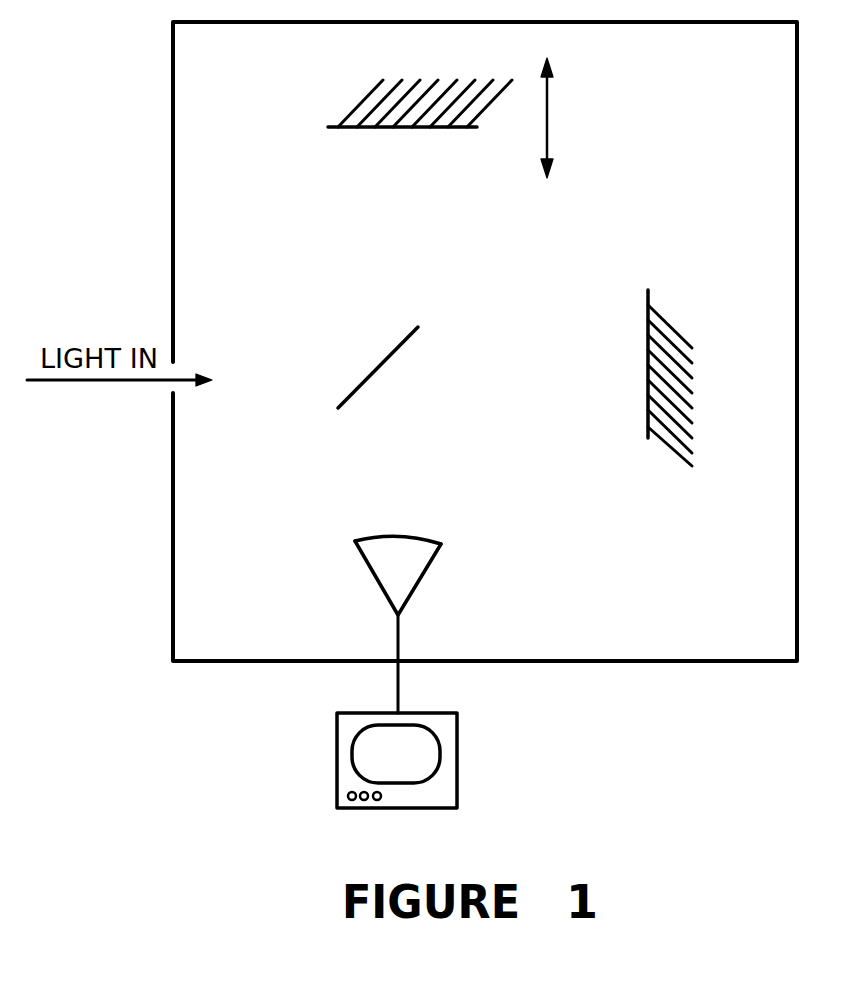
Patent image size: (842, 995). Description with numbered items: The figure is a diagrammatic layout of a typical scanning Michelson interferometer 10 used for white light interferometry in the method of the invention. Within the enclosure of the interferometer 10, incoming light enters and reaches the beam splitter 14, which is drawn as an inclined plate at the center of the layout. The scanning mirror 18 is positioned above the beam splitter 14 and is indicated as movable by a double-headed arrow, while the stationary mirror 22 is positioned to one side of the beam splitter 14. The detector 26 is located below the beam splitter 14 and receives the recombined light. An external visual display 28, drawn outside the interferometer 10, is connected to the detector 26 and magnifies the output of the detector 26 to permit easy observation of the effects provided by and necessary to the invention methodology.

The scanning Michelson interferometer 10 is at (644, 138).
The beam splitter 14 is at (370, 375).
The scanning mirror 18 is at (356, 128).
The stationary mirror 22 is at (648, 410).
The detector 26 is at (375, 575).
The external visual display 28 is at (457, 730).